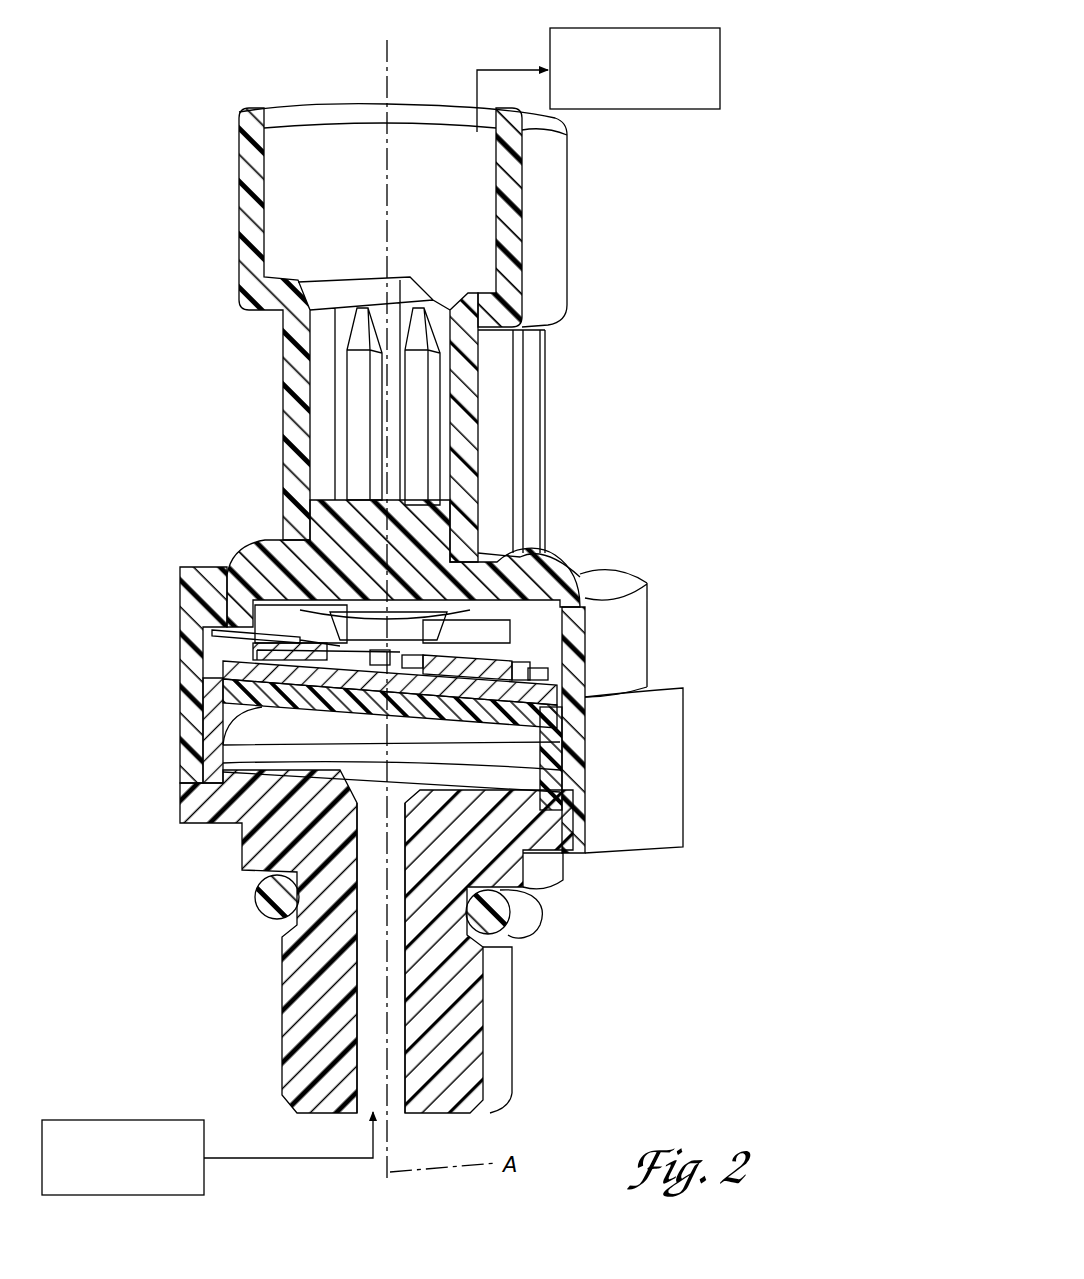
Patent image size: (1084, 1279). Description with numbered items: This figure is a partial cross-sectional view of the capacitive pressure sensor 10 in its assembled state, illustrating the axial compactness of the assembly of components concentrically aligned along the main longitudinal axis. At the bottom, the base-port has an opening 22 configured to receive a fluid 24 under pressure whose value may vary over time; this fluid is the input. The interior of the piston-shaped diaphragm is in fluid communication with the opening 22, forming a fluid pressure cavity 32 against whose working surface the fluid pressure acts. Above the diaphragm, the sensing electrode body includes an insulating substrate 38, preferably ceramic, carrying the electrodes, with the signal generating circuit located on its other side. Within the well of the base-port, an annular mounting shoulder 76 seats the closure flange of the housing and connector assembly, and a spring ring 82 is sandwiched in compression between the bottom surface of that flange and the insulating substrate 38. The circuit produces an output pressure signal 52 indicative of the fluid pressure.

The capacitive pressure sensor 10 is at (287, 86).
The opening 22 is at (402, 1114).
The fluid 24 is at (95, 1120).
The fluid pressure cavity 32 is at (257, 757).
The insulating substrate 38 is at (548, 701).
The pressure signal 52 is at (720, 62).
The annular mounting shoulder 76 is at (213, 632).
The spring ring 82 is at (257, 650).